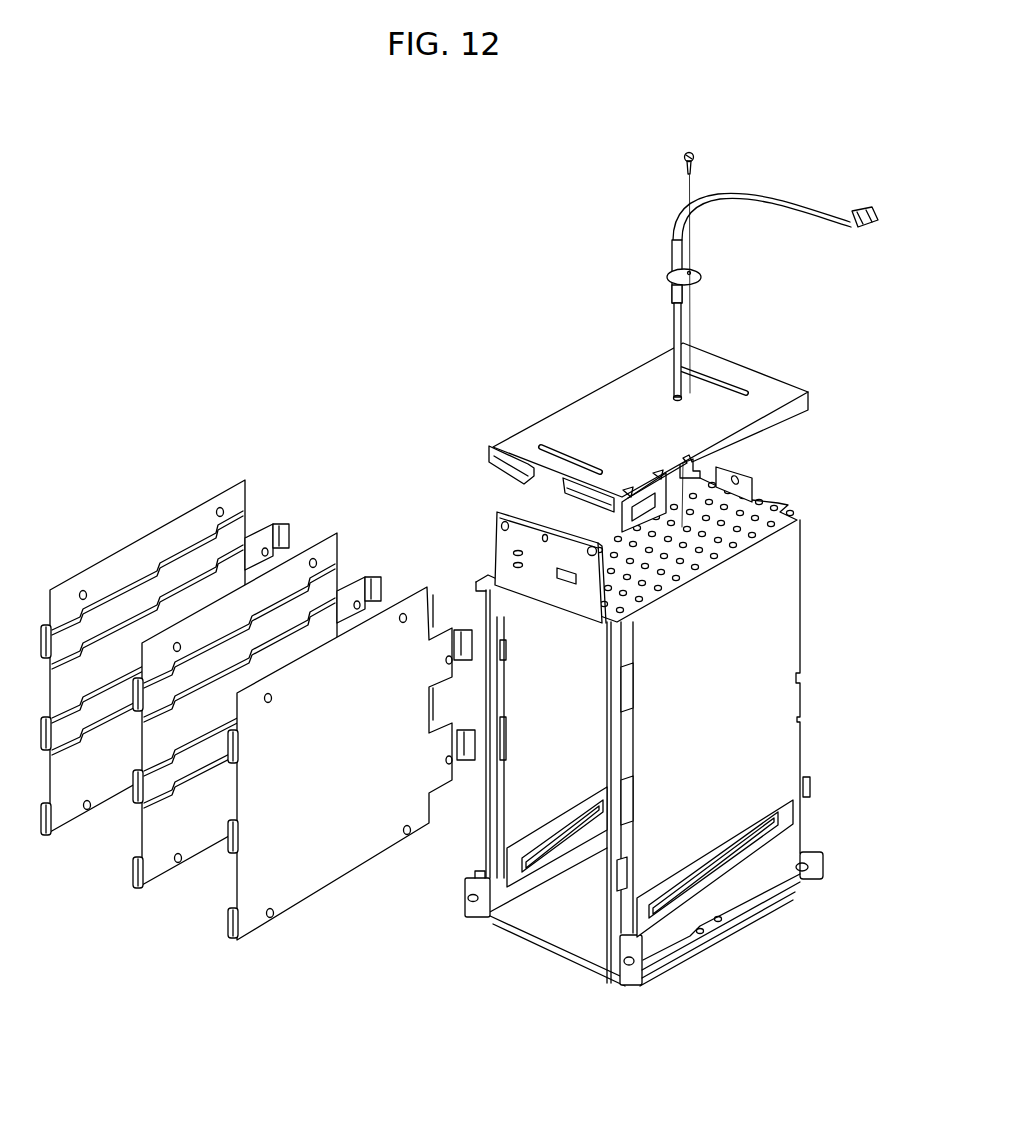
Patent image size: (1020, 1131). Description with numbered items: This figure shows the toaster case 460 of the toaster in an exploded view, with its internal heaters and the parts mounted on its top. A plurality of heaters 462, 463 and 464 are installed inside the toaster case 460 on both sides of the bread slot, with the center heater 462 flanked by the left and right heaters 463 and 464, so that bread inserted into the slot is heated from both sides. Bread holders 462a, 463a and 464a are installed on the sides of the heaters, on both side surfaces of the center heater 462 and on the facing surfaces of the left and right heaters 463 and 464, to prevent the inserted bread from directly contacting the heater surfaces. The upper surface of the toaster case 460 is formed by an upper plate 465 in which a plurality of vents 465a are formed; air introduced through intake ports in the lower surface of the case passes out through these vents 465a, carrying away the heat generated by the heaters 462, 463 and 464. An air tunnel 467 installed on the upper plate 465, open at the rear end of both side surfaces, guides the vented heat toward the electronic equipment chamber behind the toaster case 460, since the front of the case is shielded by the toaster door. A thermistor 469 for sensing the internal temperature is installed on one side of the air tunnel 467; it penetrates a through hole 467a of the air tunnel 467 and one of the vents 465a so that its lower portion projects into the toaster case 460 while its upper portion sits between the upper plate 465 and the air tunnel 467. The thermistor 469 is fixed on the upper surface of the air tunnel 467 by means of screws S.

The toaster case 460 is at (737, 697).
The heater 462 is at (250, 593).
The bread holder 462a is at (148, 807).
The heater 463 is at (175, 540).
The bread holder 463a is at (118, 598).
The heater 464 is at (312, 872).
The bread holder 464a is at (222, 827).
The upper plate 465 is at (765, 537).
The vent 465a is at (737, 512).
The air tunnel 467 is at (603, 410).
The through hole 467a is at (697, 387).
The thermistor 469 is at (674, 258).
The screw S is at (685, 156).